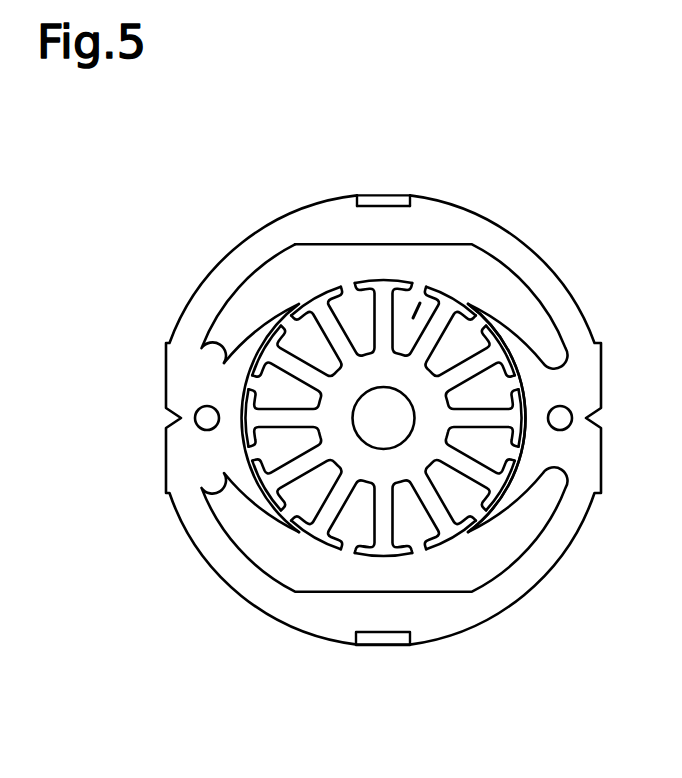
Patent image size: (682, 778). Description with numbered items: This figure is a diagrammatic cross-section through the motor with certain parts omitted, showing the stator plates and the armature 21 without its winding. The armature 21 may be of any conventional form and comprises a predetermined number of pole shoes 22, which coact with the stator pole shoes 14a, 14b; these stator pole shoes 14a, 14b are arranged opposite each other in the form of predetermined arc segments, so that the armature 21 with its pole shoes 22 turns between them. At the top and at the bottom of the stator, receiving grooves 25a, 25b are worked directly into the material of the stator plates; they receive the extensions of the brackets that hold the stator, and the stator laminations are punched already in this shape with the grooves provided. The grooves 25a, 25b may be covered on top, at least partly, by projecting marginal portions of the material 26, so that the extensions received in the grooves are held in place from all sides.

The stator pole shoe 14a is at (258, 335).
The stator pole shoe 14b is at (502, 326).
The armature 21 is at (425, 294).
The pole shoes 22 is at (357, 287).
The upper stator groove 25a is at (382, 195).
The lower stator groove 25b is at (380, 646).
The projecting marginal portions of the material 26 is at (357, 195).